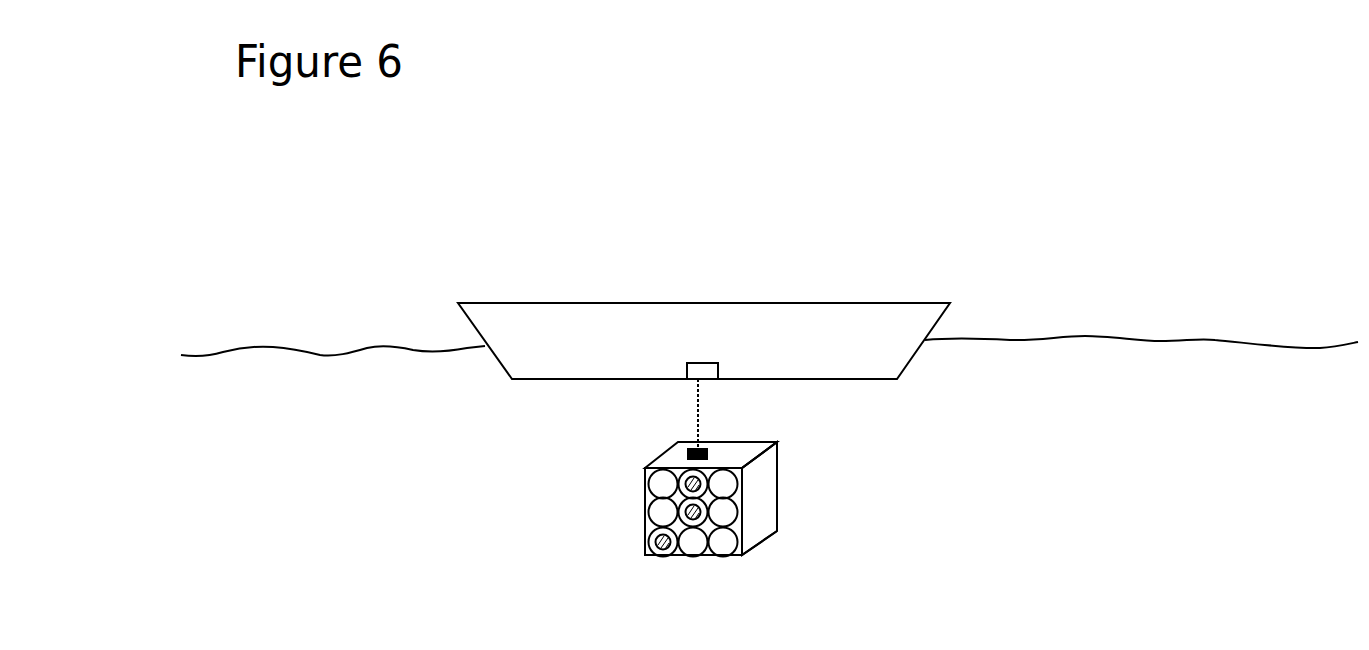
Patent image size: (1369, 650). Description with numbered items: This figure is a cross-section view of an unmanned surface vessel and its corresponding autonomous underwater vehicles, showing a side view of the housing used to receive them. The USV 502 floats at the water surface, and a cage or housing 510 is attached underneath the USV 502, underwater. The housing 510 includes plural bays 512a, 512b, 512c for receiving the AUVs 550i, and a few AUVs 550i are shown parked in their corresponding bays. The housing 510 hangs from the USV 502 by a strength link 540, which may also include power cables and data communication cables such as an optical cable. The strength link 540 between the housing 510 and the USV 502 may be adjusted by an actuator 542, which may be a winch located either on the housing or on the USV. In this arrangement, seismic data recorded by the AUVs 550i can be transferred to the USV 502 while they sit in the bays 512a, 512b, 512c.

The USV 502 is at (490, 296).
The strength link 540 is at (699, 411).
The actuator 542 is at (695, 376).
The housing 510 is at (710, 491).
The bay 512a is at (745, 483).
The bay 512b is at (744, 512).
The bay 512c is at (745, 544).
The AUVs 550i is at (657, 542).